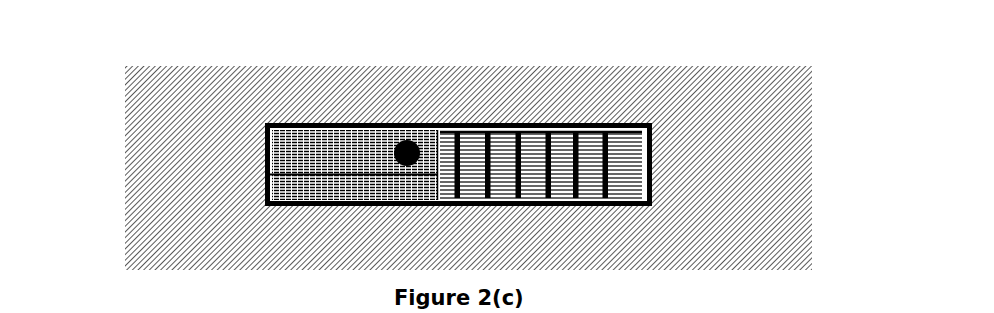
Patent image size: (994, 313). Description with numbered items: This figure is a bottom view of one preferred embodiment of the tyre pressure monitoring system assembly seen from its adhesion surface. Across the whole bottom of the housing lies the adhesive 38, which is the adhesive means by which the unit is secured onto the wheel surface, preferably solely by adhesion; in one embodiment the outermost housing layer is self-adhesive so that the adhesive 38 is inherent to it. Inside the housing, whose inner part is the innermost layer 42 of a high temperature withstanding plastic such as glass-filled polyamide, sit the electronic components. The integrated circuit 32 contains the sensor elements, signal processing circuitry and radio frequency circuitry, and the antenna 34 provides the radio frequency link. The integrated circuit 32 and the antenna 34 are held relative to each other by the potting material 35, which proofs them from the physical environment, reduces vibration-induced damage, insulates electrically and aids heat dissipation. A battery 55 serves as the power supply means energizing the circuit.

The adhesive 38 is at (185, 84).
The antenna 34 is at (651, 189).
The integrated circuit 32 is at (303, 143).
The potting material 35 is at (265, 174).
The innermost layer 42 is at (267, 203).
The battery 55 is at (411, 140).